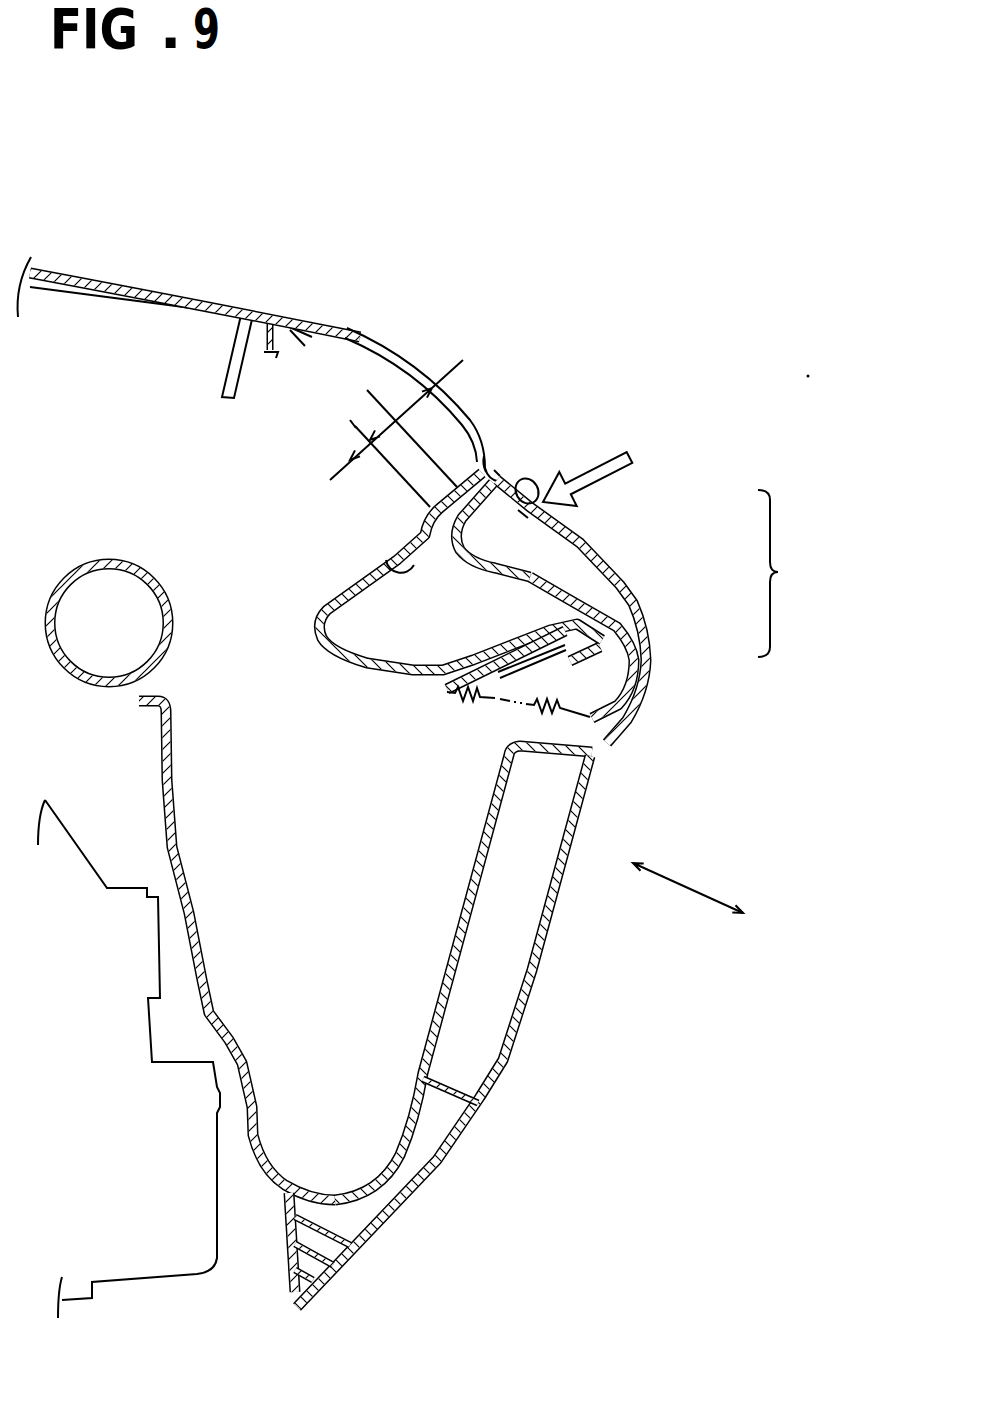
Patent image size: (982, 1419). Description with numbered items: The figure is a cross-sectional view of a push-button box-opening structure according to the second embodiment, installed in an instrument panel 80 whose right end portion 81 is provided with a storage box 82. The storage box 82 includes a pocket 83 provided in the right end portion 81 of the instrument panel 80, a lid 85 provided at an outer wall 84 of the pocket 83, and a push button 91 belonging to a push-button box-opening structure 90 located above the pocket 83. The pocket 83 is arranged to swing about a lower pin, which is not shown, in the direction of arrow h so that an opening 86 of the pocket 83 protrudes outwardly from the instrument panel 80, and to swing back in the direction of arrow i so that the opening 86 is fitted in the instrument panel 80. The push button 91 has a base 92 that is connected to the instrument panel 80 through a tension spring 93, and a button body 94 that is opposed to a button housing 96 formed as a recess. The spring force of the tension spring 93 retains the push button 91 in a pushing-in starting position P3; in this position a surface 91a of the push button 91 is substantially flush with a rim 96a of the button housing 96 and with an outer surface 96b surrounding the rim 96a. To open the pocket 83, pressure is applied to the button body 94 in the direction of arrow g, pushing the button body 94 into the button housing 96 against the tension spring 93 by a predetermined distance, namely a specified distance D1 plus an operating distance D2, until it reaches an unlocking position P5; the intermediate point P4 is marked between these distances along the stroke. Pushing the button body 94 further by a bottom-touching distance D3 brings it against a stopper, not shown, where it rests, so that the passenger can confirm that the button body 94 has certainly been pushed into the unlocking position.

The instrument panel 80 is at (259, 281).
The right end portion 81 is at (343, 327).
The storage box 82 is at (540, 1026).
The pocket 83 is at (480, 885).
The outer wall 84 is at (460, 960).
The lid 85 is at (507, 1057).
The opening 86 is at (259, 695).
The push-button box-opening structure 90 is at (541, 519).
The push button 91 is at (794, 573).
The surface 91a is at (525, 515).
The base 92 is at (647, 670).
The tension spring 93 is at (470, 697).
The button body 94 is at (587, 547).
The button housing 96 is at (377, 580).
The rim 96a is at (510, 475).
The outer surface 96b is at (484, 456).
The specified distance D1 is at (403, 398).
The operating distance D2 is at (354, 424).
The bottom-touching distance D3 is at (354, 426).
The pushing-in starting position P3 is at (497, 473).
The point P4 is at (395, 417).
The unlocking position P5 is at (354, 426).
The arrow g is at (587, 464).
The arrow h is at (751, 915).
The arrow i is at (678, 875).